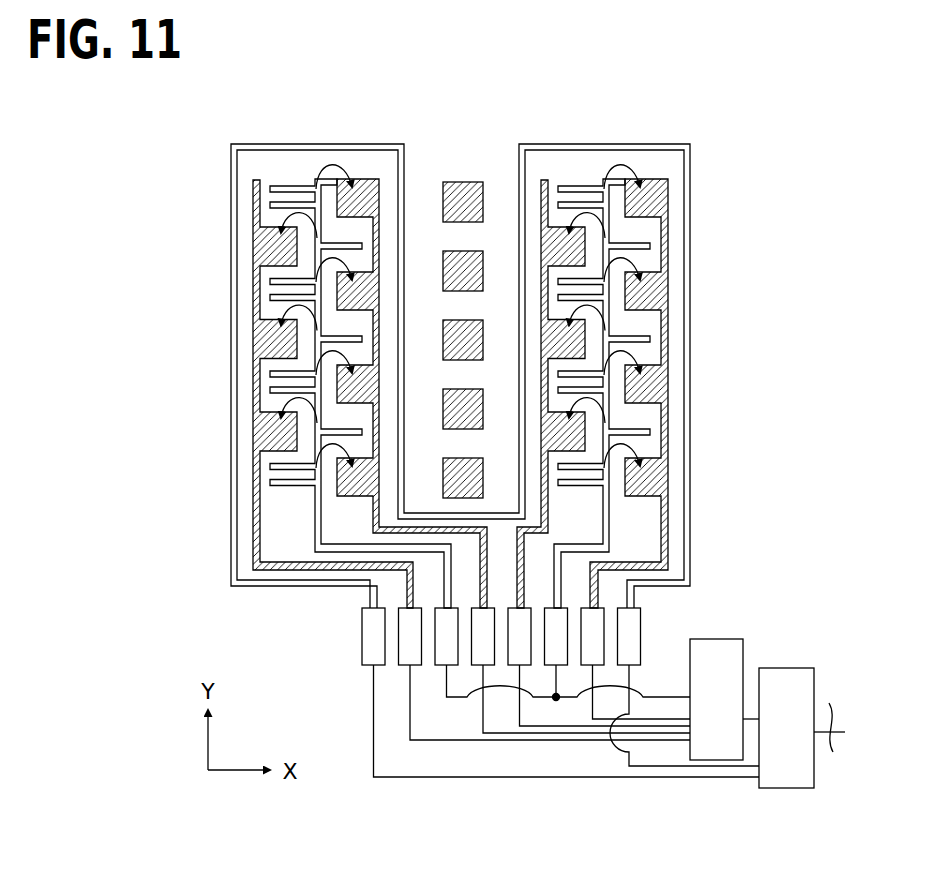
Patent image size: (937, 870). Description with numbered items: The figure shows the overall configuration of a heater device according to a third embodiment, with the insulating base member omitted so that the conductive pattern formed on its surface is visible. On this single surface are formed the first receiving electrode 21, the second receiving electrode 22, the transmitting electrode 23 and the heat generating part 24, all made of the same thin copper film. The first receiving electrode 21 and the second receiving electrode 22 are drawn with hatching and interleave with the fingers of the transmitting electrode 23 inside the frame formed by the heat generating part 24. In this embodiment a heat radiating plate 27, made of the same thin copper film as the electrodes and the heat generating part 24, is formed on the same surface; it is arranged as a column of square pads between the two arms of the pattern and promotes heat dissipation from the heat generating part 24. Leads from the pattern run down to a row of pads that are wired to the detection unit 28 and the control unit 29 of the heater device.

The first receiving electrode 21 is at (253, 197).
The second receiving electrode 22 is at (365, 179).
The transmitting electrode 23 is at (281, 185).
The heat generating part 24 is at (231, 300).
The heat radiating plate 27 is at (462, 182).
The detection unit 28 is at (715, 639).
The control unit 29 is at (787, 668).